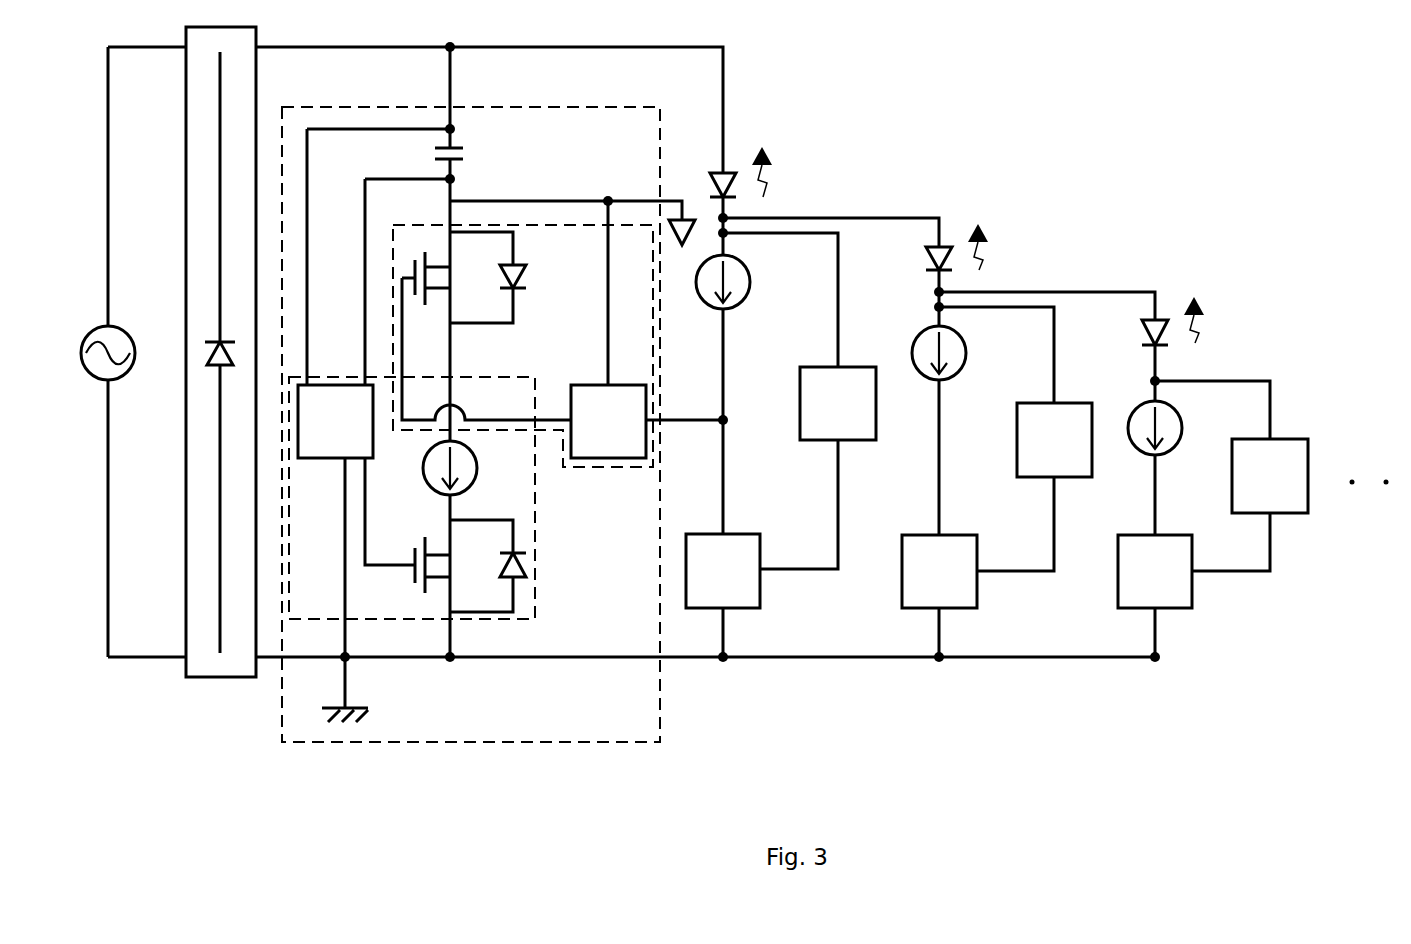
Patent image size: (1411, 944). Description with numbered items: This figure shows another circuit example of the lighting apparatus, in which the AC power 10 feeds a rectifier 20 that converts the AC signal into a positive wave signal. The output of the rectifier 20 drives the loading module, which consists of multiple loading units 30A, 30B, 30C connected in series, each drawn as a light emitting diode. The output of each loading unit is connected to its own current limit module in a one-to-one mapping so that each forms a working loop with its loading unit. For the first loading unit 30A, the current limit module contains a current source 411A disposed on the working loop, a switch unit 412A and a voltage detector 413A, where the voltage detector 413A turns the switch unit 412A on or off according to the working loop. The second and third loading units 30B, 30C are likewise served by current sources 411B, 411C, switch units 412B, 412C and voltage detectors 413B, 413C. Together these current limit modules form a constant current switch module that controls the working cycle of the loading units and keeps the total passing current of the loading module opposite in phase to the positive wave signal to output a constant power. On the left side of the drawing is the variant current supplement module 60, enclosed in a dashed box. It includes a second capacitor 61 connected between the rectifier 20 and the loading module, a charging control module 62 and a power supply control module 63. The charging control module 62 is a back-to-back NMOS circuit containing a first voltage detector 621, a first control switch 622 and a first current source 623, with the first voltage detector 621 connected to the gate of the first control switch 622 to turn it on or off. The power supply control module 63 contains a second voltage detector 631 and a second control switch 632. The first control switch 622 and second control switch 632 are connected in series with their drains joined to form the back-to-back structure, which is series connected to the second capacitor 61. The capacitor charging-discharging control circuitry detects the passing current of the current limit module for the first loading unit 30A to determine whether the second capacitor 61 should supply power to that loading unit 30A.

The AC power 10 is at (124, 378).
The rectifier 20 is at (218, 678).
The loading unit 30A is at (740, 180).
The loading unit 30B is at (952, 255).
The loading unit 30C is at (1165, 330).
The current supplement module 60 is at (660, 710).
The second capacitor 61 is at (457, 148).
The charging control module 62 is at (538, 538).
The first voltage detector 621 is at (316, 458).
The first control switch 622 is at (445, 542).
The first current source 623 is at (472, 480).
The power supply control module 63 is at (590, 470).
The second voltage detector 631 is at (590, 383).
The second control switch 632 is at (455, 247).
The current source 411A is at (748, 265).
The current source 411B is at (965, 340).
The current source 411C is at (1180, 418).
The switch unit 412A is at (762, 598).
The switch unit 412B is at (978, 598).
The switch unit 412C is at (1195, 598).
The voltage detector 413A is at (818, 367).
The voltage detector 413B is at (1042, 403).
The voltage detector 413C is at (1300, 438).